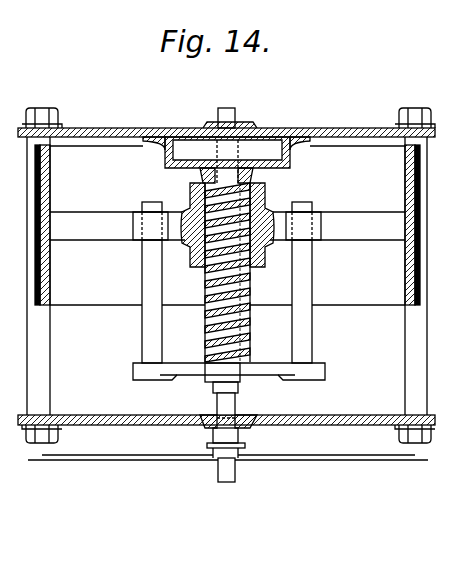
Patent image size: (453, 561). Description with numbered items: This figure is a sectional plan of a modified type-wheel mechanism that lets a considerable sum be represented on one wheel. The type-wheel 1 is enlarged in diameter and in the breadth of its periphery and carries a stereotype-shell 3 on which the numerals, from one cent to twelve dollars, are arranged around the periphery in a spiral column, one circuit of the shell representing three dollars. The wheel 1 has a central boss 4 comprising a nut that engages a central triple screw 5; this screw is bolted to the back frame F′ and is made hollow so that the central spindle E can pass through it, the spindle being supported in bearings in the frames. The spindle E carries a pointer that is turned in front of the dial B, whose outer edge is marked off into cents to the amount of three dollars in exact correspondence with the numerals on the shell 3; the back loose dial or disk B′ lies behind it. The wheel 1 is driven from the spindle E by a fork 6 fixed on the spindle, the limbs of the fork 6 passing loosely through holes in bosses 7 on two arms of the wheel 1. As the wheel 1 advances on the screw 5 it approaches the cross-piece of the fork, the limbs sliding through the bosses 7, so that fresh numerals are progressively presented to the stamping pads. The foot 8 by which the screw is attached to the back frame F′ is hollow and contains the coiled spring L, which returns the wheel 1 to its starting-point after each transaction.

The type-wheel 1 is at (227, 225).
The stereotype-shell 3 is at (36, 171).
The central boss 4 is at (229, 226).
The central triple screw 5 is at (227, 272).
The fork 6 is at (229, 291).
The bosses 7 is at (227, 226).
The foot 8 is at (165, 161).
The coiled spring L is at (227, 152).
The central spindle E is at (236, 406).
The back frame F′ is at (110, 418).
The disk B′ is at (228, 449).
The dial B is at (146, 458).